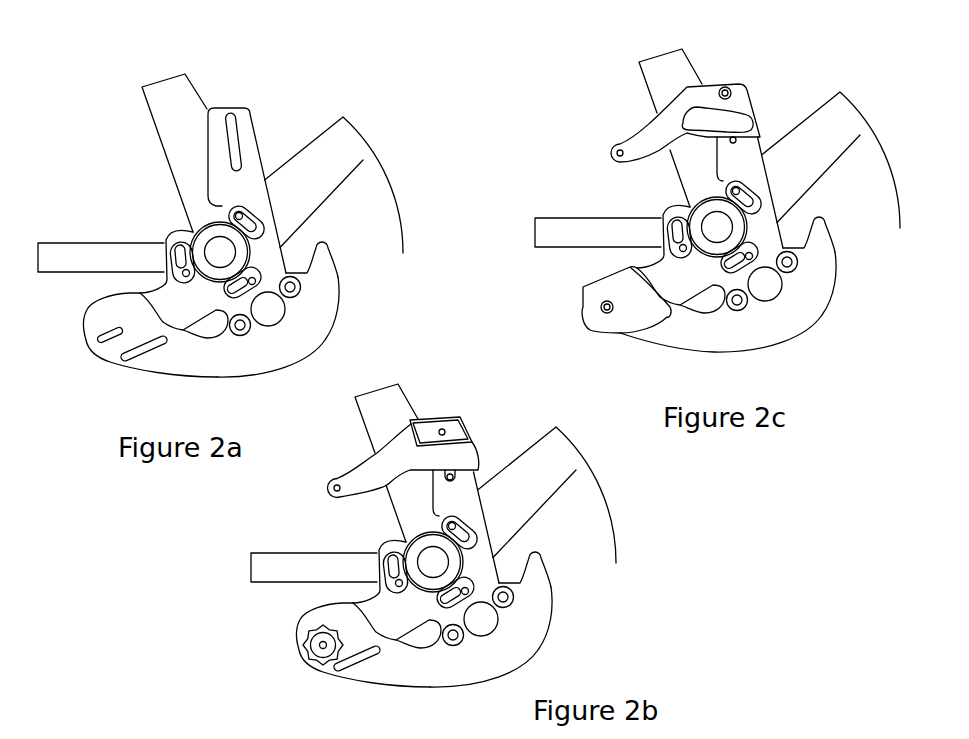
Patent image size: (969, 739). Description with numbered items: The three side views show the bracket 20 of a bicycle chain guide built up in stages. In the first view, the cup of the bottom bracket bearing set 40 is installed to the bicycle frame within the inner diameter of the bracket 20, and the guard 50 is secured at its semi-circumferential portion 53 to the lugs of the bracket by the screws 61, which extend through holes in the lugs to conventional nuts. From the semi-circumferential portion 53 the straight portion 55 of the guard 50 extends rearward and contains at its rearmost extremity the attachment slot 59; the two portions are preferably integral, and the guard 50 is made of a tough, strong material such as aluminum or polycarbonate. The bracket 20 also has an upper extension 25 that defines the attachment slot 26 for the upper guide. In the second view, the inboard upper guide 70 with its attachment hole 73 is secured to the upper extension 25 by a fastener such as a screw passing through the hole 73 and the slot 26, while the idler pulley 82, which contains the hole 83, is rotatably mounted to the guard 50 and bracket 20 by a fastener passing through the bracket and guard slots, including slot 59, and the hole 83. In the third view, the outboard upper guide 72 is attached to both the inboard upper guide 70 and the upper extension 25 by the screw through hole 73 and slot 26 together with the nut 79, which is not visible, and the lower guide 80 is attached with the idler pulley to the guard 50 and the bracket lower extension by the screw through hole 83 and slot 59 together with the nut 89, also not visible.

In FIG. 2A, the bracket 20 is at (206, 200).
In FIG. 2B, the upper extension 25 is at (539, 493).
In FIG. 2B, the attachment slot 26 is at (411, 502).
In FIG. 2A, the bottom bracket bearing set 40 is at (195, 249).
In FIG. 2A, the guard 50 is at (333, 243).
In FIG. 2A, the semi-circumferential portion 53 is at (298, 327).
In FIG. 2A, the straight portion 55 is at (156, 350).
In FIG. 2A, the attachment slot 59 is at (110, 346).
In FIG. 2A, the screws 61 is at (305, 338).
In FIG. 2B, the inboard upper guide 70 is at (403, 461).
In FIG. 2C, the outboard upper guide 72 is at (680, 123).
In FIG. 2B, the attachment hole 73 is at (452, 416).
In FIG. 2C, the nut 79 is at (749, 80).
In FIG. 2C, the lower guide 80 is at (626, 322).
In FIG. 2B, the idler pulley 82 is at (295, 645).
In FIG. 2B, the hole 83 is at (294, 672).
In FIG. 2C, the nut 89 is at (576, 300).